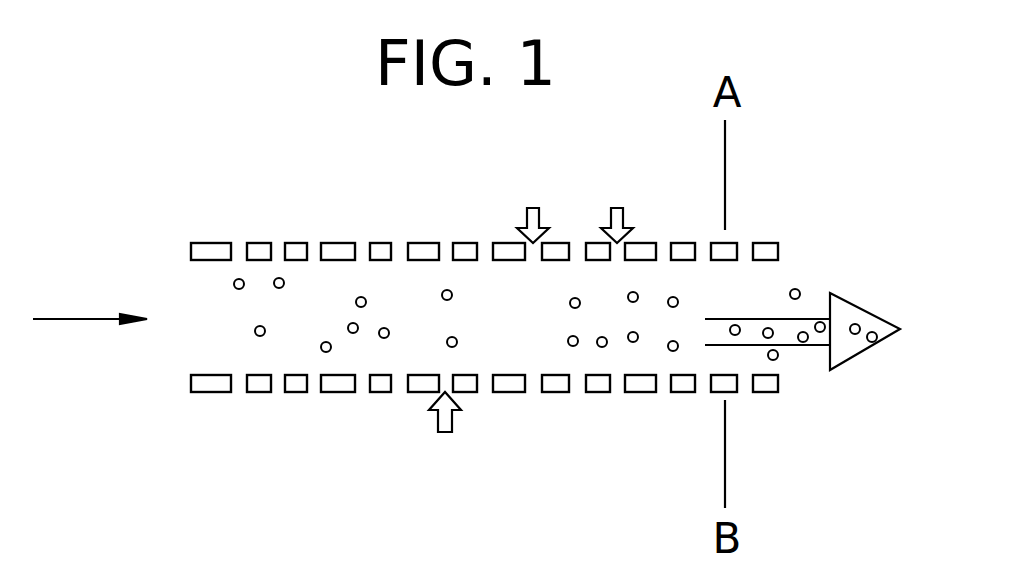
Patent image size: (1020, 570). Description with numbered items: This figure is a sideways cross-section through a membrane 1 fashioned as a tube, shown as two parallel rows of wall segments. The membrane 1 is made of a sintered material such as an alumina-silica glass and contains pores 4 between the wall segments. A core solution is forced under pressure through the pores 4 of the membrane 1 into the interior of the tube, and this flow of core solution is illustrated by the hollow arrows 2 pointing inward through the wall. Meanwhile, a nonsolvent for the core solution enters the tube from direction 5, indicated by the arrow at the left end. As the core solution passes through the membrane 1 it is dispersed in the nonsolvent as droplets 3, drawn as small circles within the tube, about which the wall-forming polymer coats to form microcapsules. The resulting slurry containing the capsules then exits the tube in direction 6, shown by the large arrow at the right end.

The membrane 1 is at (214, 250).
The arrows 2 is at (612, 220).
The droplets 3 is at (263, 336).
The pores 4 is at (313, 250).
The direction 5 is at (92, 322).
The direction 6 is at (864, 307).